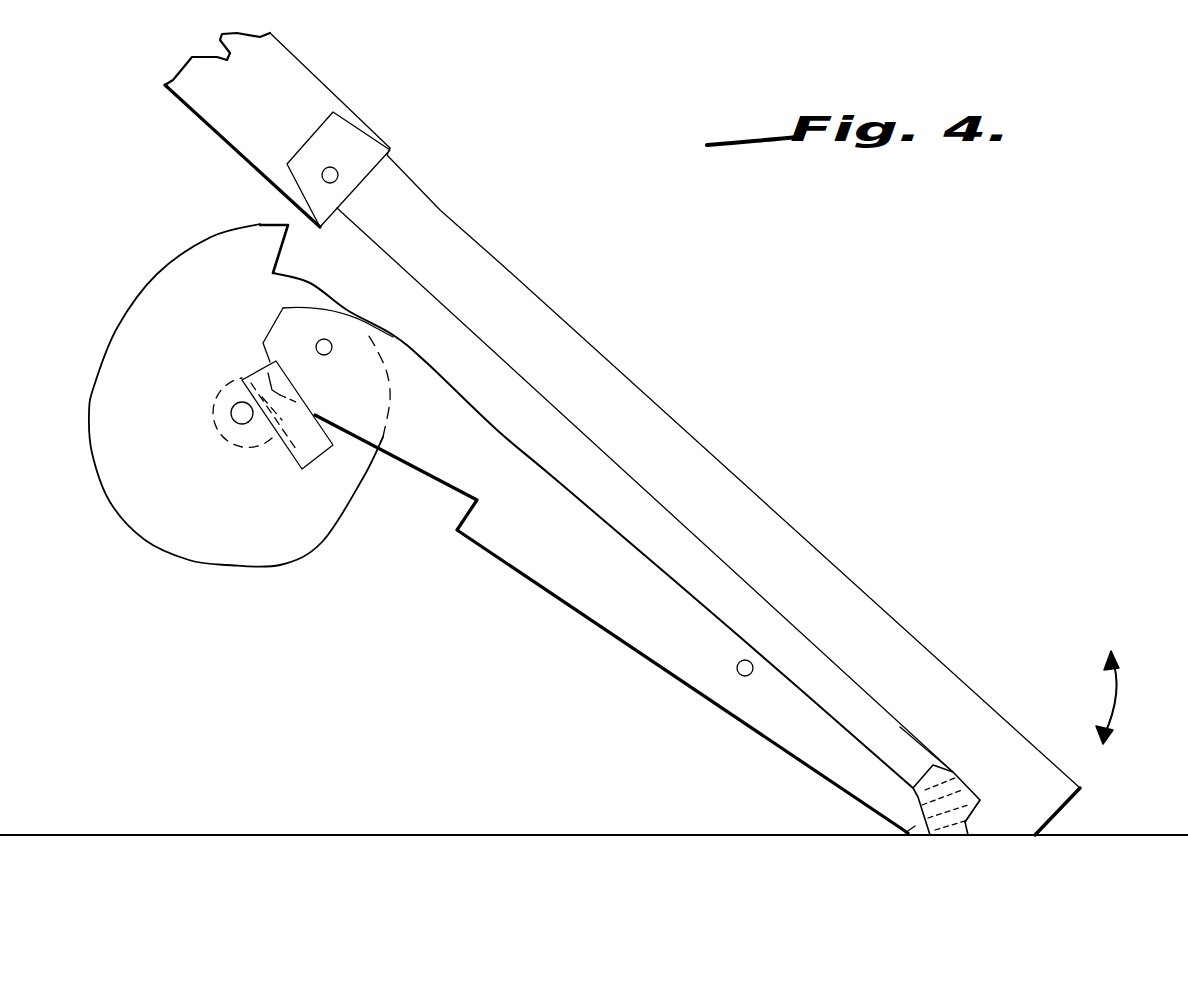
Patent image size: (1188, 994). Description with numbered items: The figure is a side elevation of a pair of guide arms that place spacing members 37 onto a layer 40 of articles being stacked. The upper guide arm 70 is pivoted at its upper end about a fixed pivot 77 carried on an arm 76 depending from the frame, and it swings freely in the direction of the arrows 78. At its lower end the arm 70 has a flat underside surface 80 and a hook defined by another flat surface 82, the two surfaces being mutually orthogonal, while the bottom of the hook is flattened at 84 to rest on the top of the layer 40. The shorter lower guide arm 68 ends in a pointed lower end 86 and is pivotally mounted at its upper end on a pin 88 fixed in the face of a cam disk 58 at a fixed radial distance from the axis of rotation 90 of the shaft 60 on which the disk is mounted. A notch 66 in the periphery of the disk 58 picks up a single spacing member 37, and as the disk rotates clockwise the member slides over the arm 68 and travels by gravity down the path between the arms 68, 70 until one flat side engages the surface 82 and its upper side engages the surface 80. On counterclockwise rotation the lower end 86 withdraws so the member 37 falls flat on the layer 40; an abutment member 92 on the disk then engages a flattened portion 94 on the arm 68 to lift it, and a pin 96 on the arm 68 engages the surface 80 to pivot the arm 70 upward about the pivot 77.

The spacing member 37 is at (955, 770).
The layer 40 is at (1140, 833).
The cam disk 58 is at (253, 550).
The shaft 60 is at (225, 388).
The notch 66 is at (290, 239).
The lower guide arm 68 is at (610, 618).
The upper guide arm 70 is at (775, 521).
The arm 76 is at (300, 92).
The pivot 77 is at (336, 168).
The arrows 78 is at (1123, 684).
The flat surface 80 is at (900, 727).
The flat surface 82 is at (967, 817).
The flattened bottom surface 84 is at (1000, 835).
The lower end 86 is at (914, 815).
The pin 88 is at (327, 339).
The axis of rotation 90 is at (237, 424).
The abutment member 92 is at (323, 455).
The flattened portion 94 is at (405, 465).
The pin 96 is at (747, 676).